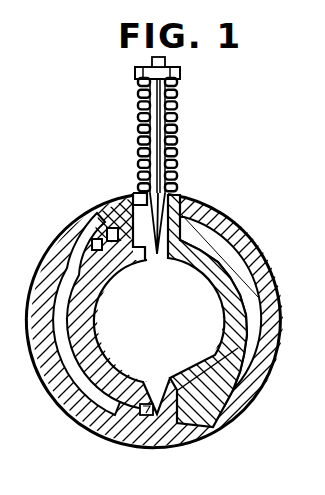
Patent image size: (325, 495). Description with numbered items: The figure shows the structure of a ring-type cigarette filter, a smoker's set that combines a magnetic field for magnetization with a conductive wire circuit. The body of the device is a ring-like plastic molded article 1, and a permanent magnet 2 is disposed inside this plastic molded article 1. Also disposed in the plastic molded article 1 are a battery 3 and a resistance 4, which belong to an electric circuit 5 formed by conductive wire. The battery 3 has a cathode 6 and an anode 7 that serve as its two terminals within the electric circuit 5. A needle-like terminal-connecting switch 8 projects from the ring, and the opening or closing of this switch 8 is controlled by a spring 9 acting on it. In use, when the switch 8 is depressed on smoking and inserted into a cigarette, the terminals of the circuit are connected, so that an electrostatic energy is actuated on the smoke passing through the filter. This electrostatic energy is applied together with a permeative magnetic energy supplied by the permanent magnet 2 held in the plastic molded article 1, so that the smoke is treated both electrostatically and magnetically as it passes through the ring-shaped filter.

The ring-like plastic molded article 1 is at (267, 248).
The permanent magnet 2 is at (250, 335).
The battery 3 is at (60, 385).
The resistance 4 is at (96, 209).
The electric circuit 5 is at (132, 197).
The cathode 6 is at (150, 230).
The anode 7 is at (150, 415).
The needle-like terminal-connecting switch 8 is at (180, 73).
The spring 9 is at (177, 125).